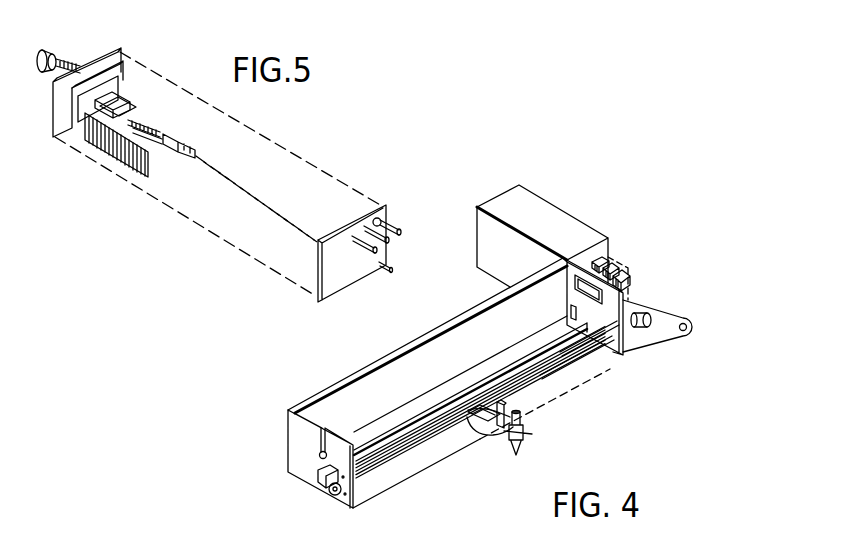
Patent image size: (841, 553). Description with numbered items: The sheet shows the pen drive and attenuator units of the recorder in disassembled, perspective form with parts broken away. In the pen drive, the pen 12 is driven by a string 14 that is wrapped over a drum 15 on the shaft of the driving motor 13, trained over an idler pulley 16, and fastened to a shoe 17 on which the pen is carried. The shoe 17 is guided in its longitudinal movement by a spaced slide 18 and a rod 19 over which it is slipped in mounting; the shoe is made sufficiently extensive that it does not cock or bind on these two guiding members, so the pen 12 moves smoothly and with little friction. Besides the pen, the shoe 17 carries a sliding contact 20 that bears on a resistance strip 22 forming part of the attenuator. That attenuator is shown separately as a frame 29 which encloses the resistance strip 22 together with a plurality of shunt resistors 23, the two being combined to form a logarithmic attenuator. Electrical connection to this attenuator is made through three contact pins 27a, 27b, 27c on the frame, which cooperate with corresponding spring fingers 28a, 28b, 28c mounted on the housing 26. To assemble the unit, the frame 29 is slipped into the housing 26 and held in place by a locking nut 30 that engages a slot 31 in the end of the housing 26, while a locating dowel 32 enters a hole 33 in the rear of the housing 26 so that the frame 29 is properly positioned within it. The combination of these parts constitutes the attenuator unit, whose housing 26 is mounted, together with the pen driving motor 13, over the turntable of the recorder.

In FIG. 4, the pen 12 is at (522, 450).
In FIG. 4, the driving motor 13 is at (568, 223).
In FIG. 4, the string 14 is at (386, 458).
In FIG. 4, the drum 15 is at (646, 327).
In FIG. 4, the idler pulley 16 is at (333, 497).
In FIG. 4, the shoe 17 is at (470, 408).
In FIG. 4, the slide 18 is at (568, 358).
In FIG. 4, the rod 19 is at (543, 388).
In FIG. 4, the sliding contact 20 is at (486, 428).
In FIG. 5, the resistance strip 22 is at (138, 170).
In FIG. 5, the shunt resistors 23 is at (160, 121).
In FIG. 4, the housing 26 is at (437, 324).
In FIG. 5, the contact pin 27a is at (366, 252).
In FIG. 5, the contact pin 27b is at (392, 222).
In FIG. 5, the contact pin 27c is at (398, 230).
In FIG. 4, the spring finger 28a is at (627, 278).
In FIG. 4, the spring finger 28b is at (617, 268).
In FIG. 4, the spring finger 28c is at (603, 266).
In FIG. 5, the frame 29 is at (288, 148).
In FIG. 5, the locking nut 30 is at (57, 50).
In FIG. 4, the slot 31 is at (320, 457).
In FIG. 5, the locating dowel 32 is at (388, 268).
In FIG. 4, the hole 33 is at (573, 307).